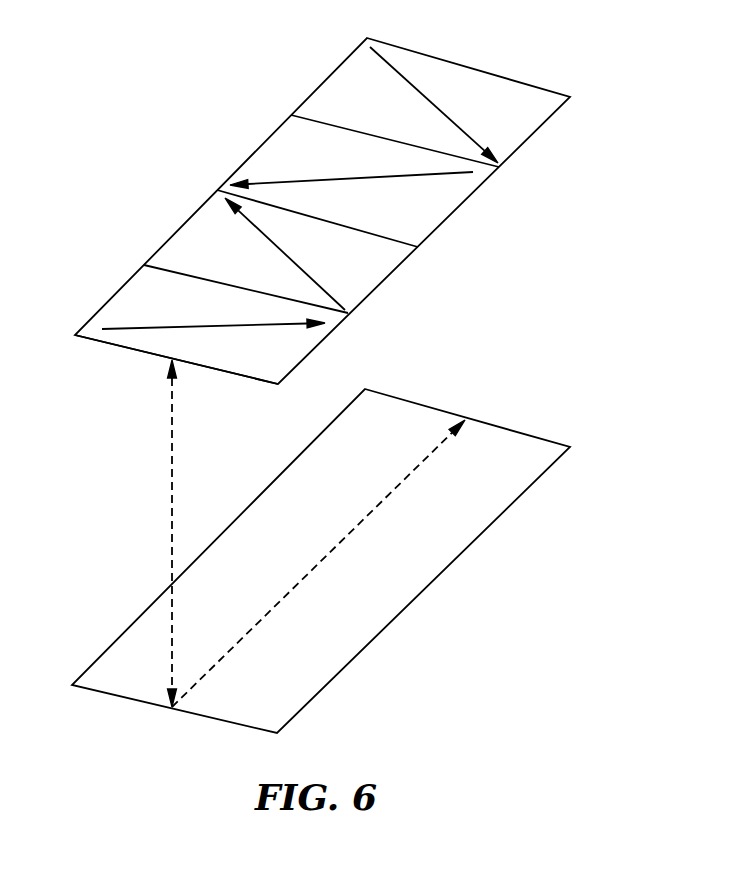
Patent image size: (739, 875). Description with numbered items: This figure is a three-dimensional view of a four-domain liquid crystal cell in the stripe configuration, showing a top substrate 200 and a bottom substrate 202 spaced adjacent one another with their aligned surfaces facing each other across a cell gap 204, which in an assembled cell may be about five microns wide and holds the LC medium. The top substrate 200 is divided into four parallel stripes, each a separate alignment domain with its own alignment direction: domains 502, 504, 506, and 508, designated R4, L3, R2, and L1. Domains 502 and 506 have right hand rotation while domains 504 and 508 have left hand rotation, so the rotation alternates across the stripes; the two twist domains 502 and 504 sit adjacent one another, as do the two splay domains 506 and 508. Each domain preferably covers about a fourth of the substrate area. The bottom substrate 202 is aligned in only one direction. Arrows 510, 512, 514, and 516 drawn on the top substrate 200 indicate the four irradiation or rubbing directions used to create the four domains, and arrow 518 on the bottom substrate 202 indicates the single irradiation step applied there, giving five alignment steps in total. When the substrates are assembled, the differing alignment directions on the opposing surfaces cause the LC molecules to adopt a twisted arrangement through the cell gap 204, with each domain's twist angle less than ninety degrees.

The top substrate 200 is at (512, 95).
The bottom substrate 202 is at (507, 475).
The cell gap 204 is at (170, 515).
The alignment domain (R4) 502 is at (513, 123).
The alignment domain (L3) 504 is at (420, 218).
The alignment domain (R2) 506 is at (367, 270).
The alignment domain (L1) 508 is at (283, 343).
The irradiation arrow 510 is at (407, 80).
The irradiation arrow 512 is at (238, 180).
The irradiation arrow 514 is at (217, 212).
The irradiation arrow 516 is at (160, 328).
The irradiation arrow 518 is at (323, 558).